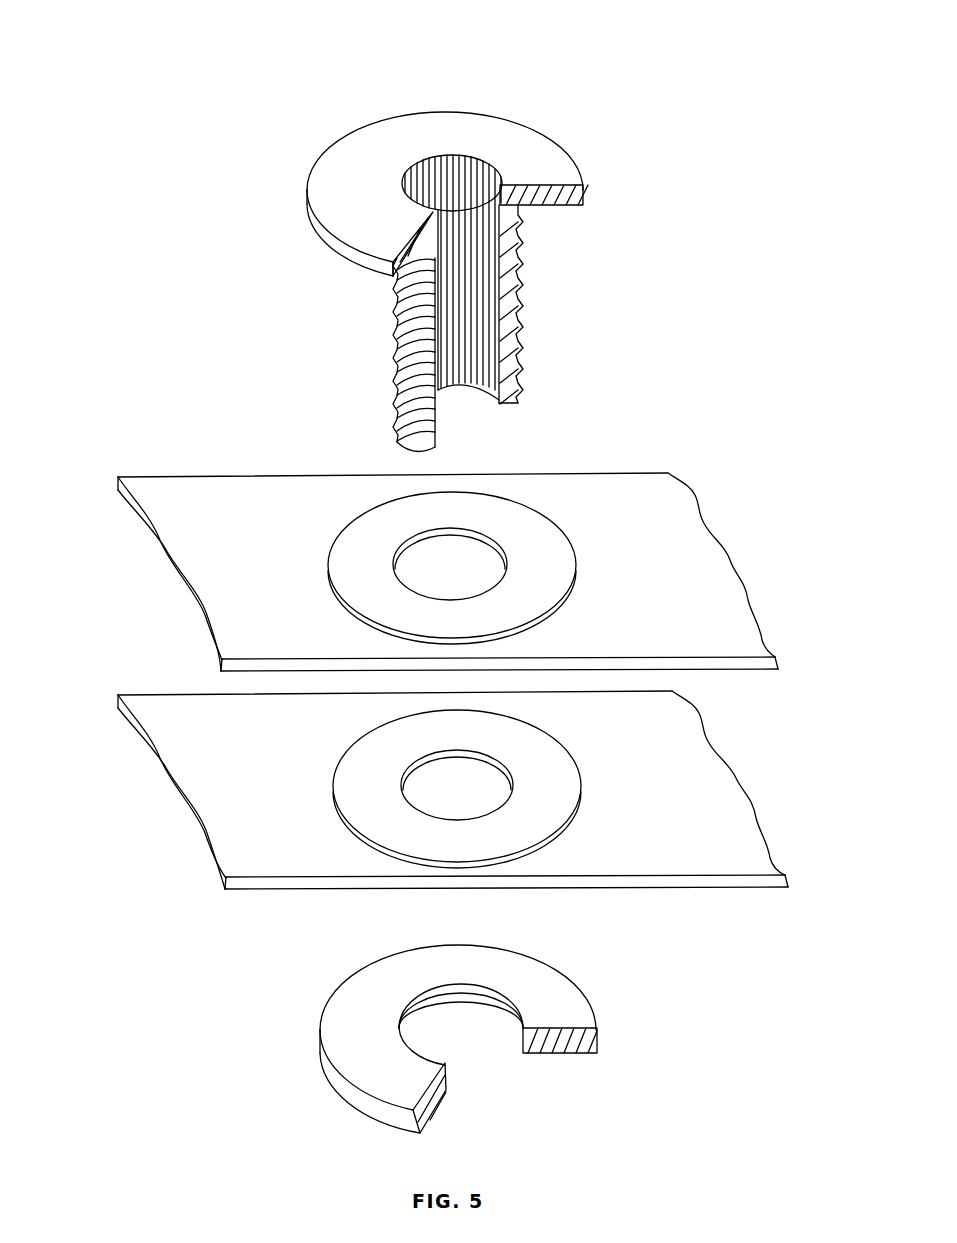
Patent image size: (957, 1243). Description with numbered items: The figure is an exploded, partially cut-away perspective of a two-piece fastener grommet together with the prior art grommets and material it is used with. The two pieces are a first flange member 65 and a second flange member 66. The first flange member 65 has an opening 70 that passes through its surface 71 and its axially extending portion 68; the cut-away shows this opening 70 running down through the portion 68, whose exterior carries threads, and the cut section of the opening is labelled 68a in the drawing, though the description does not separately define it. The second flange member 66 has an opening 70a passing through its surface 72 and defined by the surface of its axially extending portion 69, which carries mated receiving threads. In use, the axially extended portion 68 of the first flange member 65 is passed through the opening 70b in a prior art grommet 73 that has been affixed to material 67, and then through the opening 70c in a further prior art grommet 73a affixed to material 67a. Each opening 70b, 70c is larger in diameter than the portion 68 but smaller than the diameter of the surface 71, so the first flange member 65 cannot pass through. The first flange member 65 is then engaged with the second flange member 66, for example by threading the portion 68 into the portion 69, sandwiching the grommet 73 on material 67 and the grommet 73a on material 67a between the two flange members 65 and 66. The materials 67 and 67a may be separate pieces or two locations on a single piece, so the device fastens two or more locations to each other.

The first flange member 65 is at (640, 180).
The surface 71 is at (350, 160).
The bore 68a is at (462, 155).
The axially extending portion 68 is at (395, 378).
The opening 70 is at (453, 393).
The material 67 is at (267, 638).
The prior art grommet 73 is at (345, 547).
The opening 70b is at (430, 591).
The material 67a is at (267, 835).
The prior art grommet 73a is at (382, 735).
The opening 70c is at (442, 792).
The surface 72 is at (358, 998).
The axially extending portion 69 is at (498, 997).
The opening 70a is at (468, 1040).
The second flange member 66 is at (262, 1068).